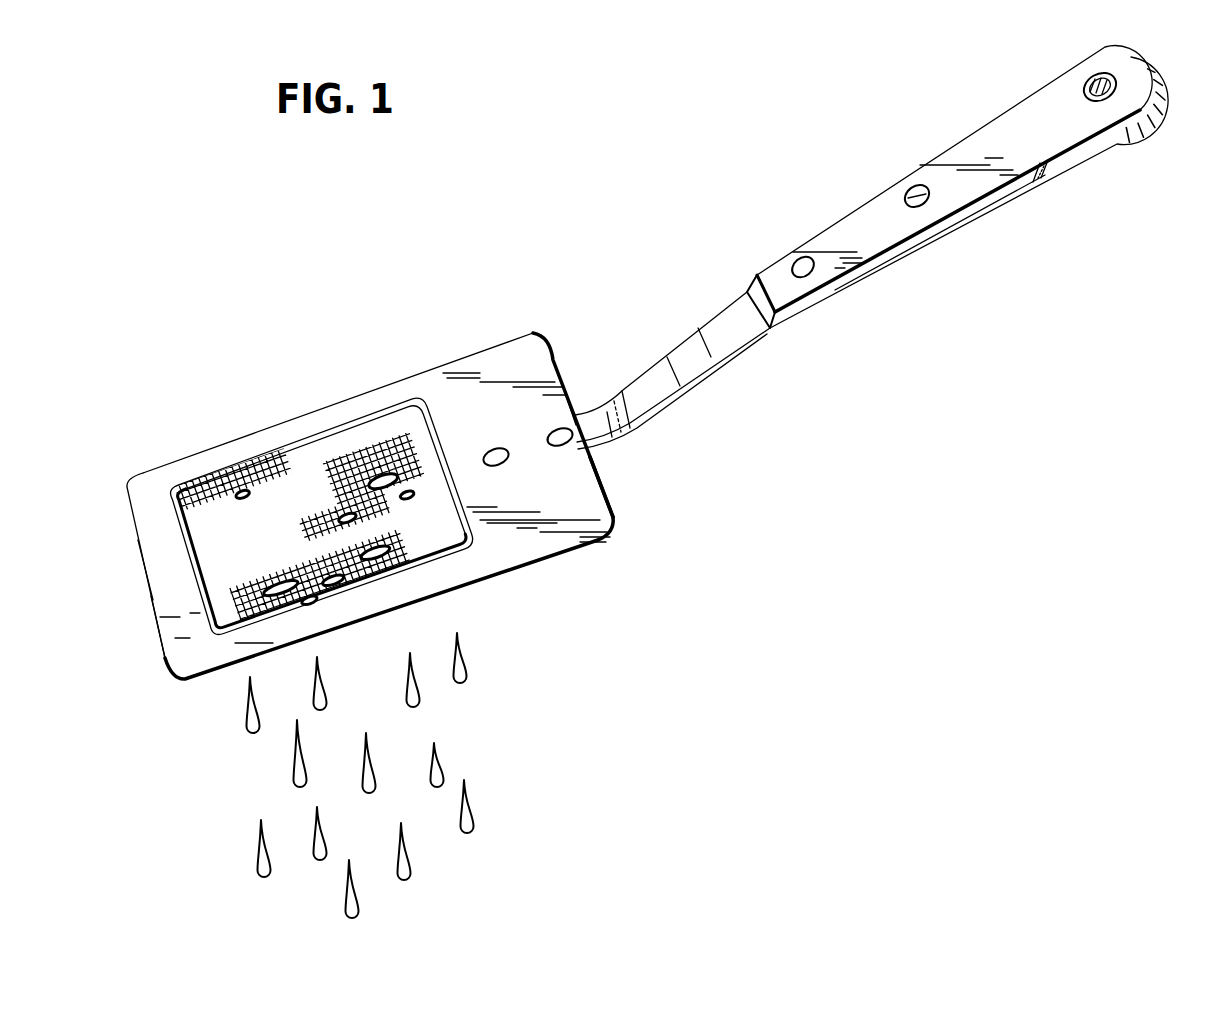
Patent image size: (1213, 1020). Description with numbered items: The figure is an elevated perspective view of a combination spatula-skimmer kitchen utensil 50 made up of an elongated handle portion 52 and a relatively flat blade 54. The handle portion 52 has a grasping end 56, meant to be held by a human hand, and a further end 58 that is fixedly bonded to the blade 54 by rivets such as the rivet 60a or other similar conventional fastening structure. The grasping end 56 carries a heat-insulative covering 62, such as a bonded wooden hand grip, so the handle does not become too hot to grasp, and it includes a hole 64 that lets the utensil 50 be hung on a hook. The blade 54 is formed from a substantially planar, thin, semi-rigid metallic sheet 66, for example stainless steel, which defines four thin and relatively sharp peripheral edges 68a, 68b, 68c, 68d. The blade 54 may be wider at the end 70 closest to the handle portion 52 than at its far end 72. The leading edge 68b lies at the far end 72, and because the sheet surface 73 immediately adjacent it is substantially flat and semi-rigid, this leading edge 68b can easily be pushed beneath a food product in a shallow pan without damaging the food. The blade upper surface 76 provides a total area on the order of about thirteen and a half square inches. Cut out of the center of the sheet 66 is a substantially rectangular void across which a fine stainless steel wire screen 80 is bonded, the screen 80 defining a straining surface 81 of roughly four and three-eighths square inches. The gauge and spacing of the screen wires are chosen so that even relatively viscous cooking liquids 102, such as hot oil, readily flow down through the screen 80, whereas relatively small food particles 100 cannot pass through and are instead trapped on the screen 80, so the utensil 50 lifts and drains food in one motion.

The combination spatula-skimmer kitchen utensil 50 is at (742, 446).
The handle portion 52 is at (700, 220).
The blade 54 is at (279, 350).
The grasping end 56 is at (1136, 134).
The further end 58 is at (603, 449).
The rivet 60a is at (494, 449).
The heat-insulative covering 62 is at (1040, 105).
The hole 64 is at (1108, 82).
The sheet 66 is at (463, 362).
The peripheral edge 68a is at (397, 384).
The leading edge 68b is at (566, 421).
The peripheral edge 68c is at (527, 565).
The peripheral edge 68d is at (608, 486).
The end closest to handle 70 is at (552, 355).
The far end 72 is at (124, 512).
The sheet surface 73 is at (153, 546).
The blade upper surface 76 is at (595, 510).
The screen 80 is at (268, 488).
The straining surface 81 is at (210, 593).
The food particles 100 is at (388, 562).
The cooking liquids 102 is at (474, 808).